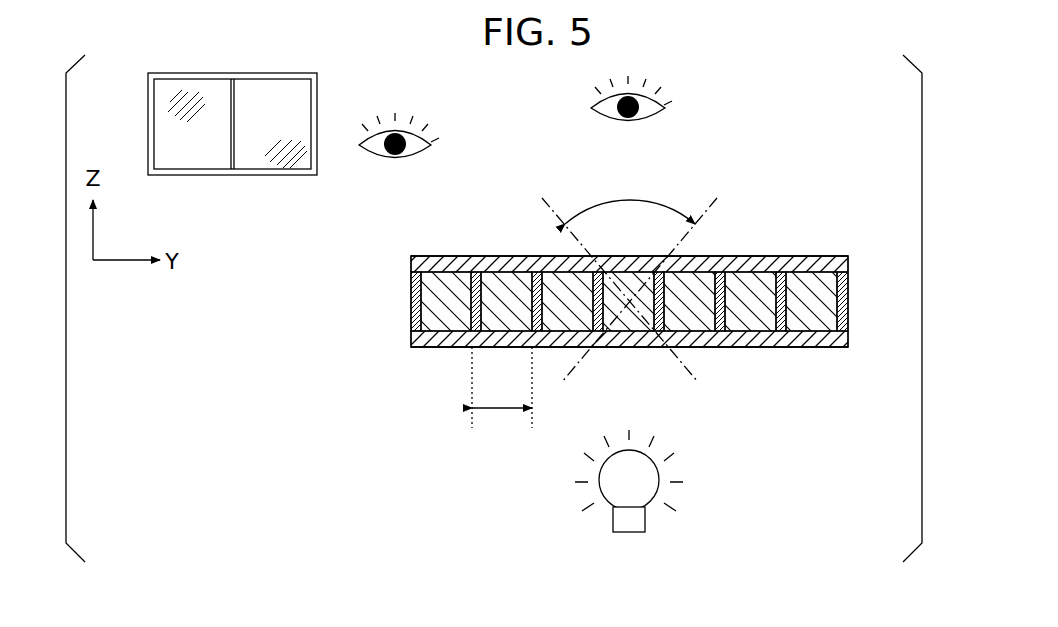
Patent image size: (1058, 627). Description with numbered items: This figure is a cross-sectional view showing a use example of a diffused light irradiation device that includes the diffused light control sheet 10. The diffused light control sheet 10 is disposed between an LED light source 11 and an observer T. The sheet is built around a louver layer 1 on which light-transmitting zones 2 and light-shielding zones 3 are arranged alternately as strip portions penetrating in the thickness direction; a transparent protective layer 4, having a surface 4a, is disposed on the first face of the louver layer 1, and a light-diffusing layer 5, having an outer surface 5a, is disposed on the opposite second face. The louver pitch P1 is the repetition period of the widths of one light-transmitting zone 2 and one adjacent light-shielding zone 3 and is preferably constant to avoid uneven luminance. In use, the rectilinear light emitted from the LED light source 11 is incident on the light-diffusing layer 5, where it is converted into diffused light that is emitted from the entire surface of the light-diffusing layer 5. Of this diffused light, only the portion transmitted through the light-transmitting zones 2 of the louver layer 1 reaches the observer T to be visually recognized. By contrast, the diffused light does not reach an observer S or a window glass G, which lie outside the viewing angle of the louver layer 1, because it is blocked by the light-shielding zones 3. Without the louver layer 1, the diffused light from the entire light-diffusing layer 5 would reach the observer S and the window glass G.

The louver layer 1 is at (560, 308).
The light-transmitting zone 2 is at (411, 300).
The light-shielding zone 3 is at (411, 323).
The transparent protective layer 4 is at (578, 237).
The surface of transparent protective layer 4a is at (797, 256).
The light-diffusing layer 5 is at (579, 367).
The outer surface of light-diffusing layer 5a is at (800, 347).
The diffused light control sheet 10 is at (579, 274).
The LED light source 11 is at (613, 522).
The window glass G is at (318, 97).
The observer S is at (395, 160).
The observer T is at (633, 122).
The louver pitch P1 is at (502, 395).